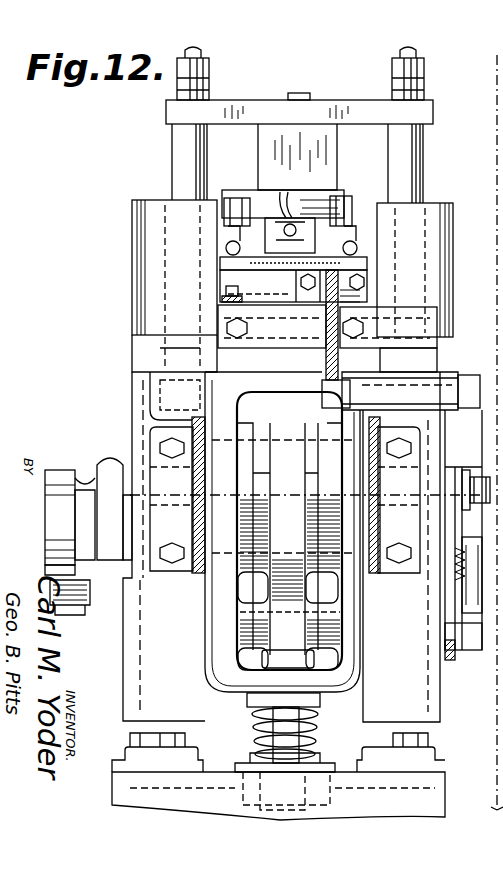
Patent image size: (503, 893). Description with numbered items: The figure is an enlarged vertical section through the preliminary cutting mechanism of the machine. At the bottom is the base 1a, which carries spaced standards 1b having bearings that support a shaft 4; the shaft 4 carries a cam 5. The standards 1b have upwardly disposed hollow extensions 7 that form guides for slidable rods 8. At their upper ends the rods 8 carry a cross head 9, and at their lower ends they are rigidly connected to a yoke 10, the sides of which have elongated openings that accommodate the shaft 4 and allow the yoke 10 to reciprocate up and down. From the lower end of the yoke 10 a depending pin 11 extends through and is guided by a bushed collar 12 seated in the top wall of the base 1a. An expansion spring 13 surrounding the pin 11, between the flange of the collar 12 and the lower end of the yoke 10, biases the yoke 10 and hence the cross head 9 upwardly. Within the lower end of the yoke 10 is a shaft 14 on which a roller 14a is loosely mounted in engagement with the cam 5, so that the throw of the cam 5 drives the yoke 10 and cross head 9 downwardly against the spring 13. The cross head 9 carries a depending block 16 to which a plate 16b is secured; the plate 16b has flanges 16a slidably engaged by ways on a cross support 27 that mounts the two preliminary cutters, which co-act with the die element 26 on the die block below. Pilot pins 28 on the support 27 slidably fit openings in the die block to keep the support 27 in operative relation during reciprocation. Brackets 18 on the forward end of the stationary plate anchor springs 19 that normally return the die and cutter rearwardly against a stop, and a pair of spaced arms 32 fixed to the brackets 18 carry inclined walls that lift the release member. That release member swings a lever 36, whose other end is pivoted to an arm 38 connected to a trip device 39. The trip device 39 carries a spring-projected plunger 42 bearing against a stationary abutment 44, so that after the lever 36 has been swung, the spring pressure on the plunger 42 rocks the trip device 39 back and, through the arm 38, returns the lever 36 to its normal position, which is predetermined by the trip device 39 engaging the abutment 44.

The base 1a is at (120, 782).
The standards 1b is at (130, 666).
The shaft 4 is at (96, 474).
The cam 5 is at (291, 427).
The hollow extensions 7 is at (132, 235).
The slidable rods 8 is at (172, 152).
The cross head 9 is at (272, 100).
The yoke 10 is at (355, 599).
The depending pin 11 is at (312, 724).
The bushed collar 12 is at (322, 760).
The expansion spring 13 is at (252, 711).
The shaft 14 is at (364, 626).
The roller 14a is at (272, 654).
The depending block 16 is at (260, 150).
The flanges 16a is at (248, 209).
The plate 16b is at (321, 198).
The brackets 18 is at (283, 347).
The springs 19 is at (256, 269).
The die element 26 is at (282, 192).
The cross support 27 is at (330, 204).
The pilot pins 28 is at (226, 243).
The spaced arms 32 is at (293, 325).
The lever 36 is at (328, 328).
The arm 38 is at (470, 467).
The trip device 39 is at (455, 583).
The plunger 42 is at (450, 646).
The abutment 44 is at (474, 625).